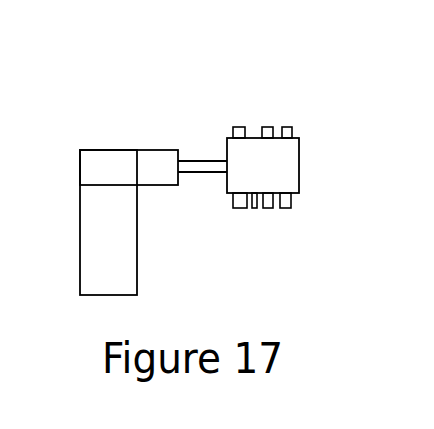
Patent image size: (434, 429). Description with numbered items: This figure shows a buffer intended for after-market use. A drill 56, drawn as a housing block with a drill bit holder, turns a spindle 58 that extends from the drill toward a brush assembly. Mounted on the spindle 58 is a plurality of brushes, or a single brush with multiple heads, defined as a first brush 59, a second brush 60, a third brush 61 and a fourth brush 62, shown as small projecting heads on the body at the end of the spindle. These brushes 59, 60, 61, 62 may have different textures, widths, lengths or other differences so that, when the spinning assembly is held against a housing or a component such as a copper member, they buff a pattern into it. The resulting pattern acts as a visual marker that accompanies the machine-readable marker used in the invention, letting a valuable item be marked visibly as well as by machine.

The drill 56 is at (93, 219).
The spindle 58 is at (202, 163).
The first brush 59 is at (233, 130).
The second brush 60 is at (245, 127).
The third brush 61 is at (268, 127).
The fourth brush 62 is at (287, 127).